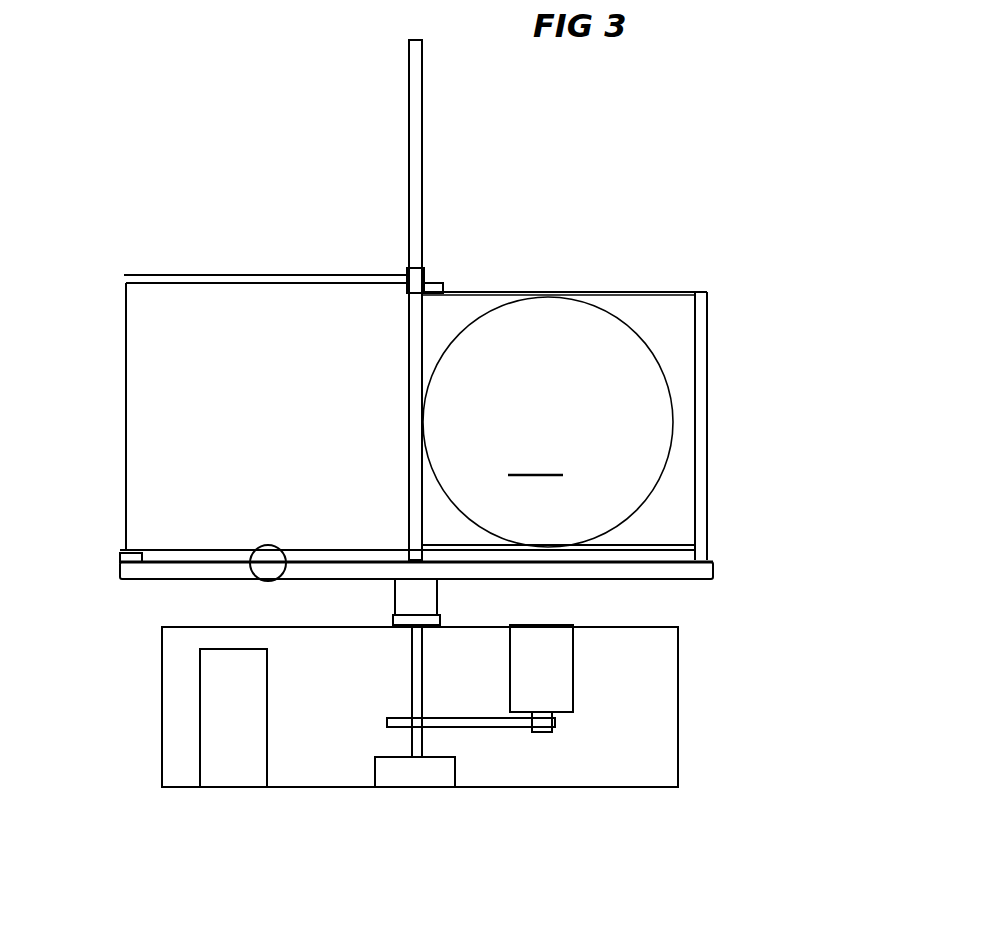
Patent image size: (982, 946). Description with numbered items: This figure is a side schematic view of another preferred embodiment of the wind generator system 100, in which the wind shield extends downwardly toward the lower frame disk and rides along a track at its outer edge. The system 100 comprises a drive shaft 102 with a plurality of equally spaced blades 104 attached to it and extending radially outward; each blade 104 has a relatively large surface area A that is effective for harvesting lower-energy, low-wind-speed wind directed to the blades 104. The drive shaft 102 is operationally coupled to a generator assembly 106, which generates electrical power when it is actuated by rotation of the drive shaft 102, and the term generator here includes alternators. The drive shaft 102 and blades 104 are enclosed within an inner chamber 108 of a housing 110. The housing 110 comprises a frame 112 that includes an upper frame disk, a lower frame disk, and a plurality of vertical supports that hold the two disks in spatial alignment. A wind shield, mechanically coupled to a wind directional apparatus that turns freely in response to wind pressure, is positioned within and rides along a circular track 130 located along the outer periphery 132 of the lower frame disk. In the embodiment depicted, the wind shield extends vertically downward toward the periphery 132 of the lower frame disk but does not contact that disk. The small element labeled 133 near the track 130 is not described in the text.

The wind generator system 100 is at (600, 220).
The drive shaft 102 is at (407, 518).
The blade 104 is at (548, 422).
The generator assembly 106 is at (575, 676).
The inner chamber 108 is at (672, 331).
The housing 110 is at (645, 287).
The frame 112 is at (717, 562).
The circular track 130 is at (160, 556).
The outer periphery 132 is at (120, 563).
The roller 133 is at (248, 574).